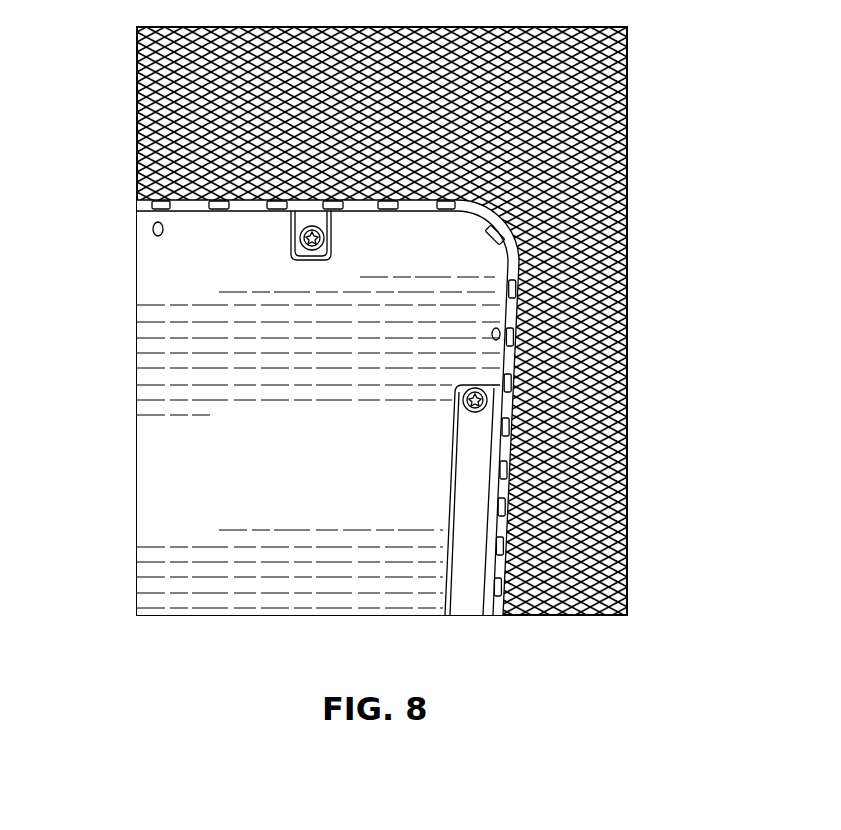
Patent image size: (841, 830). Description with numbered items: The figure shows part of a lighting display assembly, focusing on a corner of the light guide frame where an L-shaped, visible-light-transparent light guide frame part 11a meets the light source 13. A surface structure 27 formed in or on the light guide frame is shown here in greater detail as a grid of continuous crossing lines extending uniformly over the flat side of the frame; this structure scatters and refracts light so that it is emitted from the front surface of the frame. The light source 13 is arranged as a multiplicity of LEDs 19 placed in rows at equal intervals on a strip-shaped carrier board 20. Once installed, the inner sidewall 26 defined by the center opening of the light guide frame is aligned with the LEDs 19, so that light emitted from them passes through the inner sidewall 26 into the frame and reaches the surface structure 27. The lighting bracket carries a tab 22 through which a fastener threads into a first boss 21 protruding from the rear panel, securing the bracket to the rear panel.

The light guide frame part 11a is at (634, 223).
The light source 13 is at (116, 205).
The LEDs 19 is at (220, 211).
The strip-shaped carrier board 20 is at (260, 212).
The first boss 21 is at (480, 405).
The tab 22 is at (465, 597).
The inner sidewall 26 is at (507, 258).
The surface structure 27 is at (613, 542).